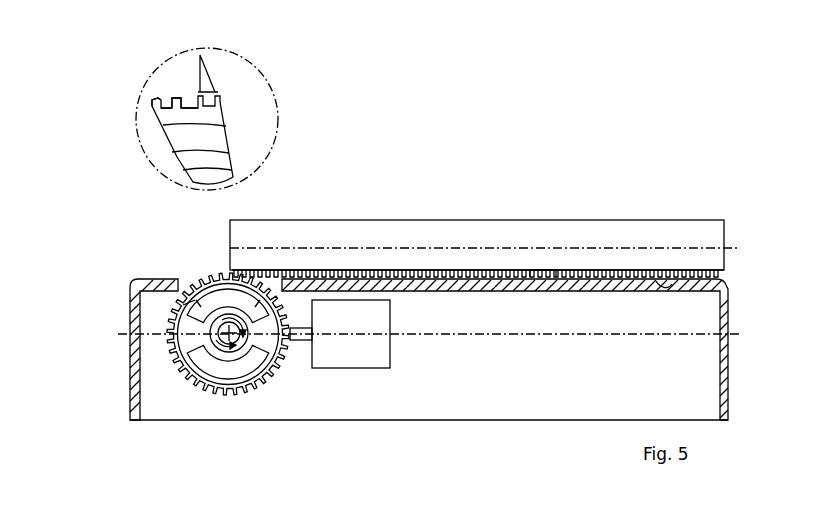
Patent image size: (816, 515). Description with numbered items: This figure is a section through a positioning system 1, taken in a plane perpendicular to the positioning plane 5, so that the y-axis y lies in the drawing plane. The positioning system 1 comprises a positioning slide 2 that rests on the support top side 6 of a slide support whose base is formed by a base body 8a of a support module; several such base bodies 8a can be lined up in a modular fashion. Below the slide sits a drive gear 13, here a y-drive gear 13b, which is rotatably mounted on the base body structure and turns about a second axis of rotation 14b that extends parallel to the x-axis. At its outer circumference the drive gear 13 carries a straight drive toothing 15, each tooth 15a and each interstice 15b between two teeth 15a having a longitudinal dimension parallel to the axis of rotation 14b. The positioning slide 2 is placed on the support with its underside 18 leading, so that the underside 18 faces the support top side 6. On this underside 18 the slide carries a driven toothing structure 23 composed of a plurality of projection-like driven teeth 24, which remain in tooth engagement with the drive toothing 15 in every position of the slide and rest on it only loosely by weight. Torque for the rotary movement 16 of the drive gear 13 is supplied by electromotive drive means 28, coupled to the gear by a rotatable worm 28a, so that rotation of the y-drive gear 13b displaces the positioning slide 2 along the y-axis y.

The positioning system 1 is at (651, 185).
The positioning slide 2 is at (600, 228).
The positioning plane 5 is at (567, 233).
The support top side 6 is at (355, 270).
The base body 8a is at (519, 402).
The drive gear 13 is at (257, 277).
The y-drive gear 13b is at (245, 393).
The second axis of rotation 14b is at (200, 343).
The drive toothing 15 is at (165, 305).
The tooth 15a is at (267, 286).
The interstice 15b is at (210, 270).
The rotary movement 16 is at (222, 345).
The underside 18 is at (662, 285).
The driven toothing structure 23 is at (422, 293).
The driven tooth 24 is at (546, 279).
The drive means 28 is at (373, 368).
The worm 28a is at (300, 341).
The y-axis y is at (477, 191).